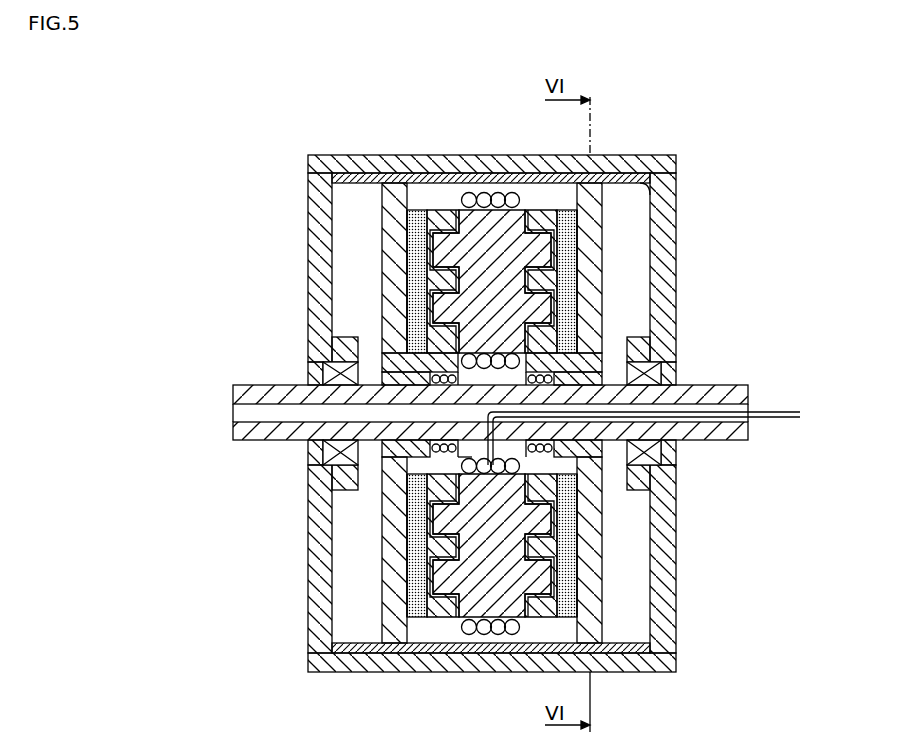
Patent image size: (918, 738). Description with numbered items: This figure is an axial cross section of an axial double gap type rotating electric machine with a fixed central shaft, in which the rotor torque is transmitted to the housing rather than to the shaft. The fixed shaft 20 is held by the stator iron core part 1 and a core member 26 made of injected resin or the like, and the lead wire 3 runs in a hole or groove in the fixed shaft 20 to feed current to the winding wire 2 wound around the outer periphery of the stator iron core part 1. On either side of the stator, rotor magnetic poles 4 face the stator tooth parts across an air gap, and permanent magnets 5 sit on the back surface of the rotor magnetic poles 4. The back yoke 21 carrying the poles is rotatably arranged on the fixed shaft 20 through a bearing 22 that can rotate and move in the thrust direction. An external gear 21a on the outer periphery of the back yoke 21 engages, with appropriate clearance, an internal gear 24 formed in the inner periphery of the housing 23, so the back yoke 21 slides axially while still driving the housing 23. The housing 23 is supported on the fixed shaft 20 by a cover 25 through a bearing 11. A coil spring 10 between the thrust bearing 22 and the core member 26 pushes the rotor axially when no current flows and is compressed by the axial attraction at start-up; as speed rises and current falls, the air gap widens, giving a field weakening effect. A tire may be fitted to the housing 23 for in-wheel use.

The stator iron core part 1 is at (440, 215).
The winding wire 2 is at (467, 198).
The lead wire 3 is at (770, 413).
The rotor magnetic poles 4 is at (417, 213).
The permanent magnet 5 is at (405, 210).
The coil spring 10 is at (494, 363).
The bearing 11 is at (340, 362).
The fixed shaft 20 is at (723, 395).
The back yoke 21 is at (393, 213).
The external gear 21a is at (348, 178).
The bearing 22 is at (383, 353).
The housing 23 is at (485, 165).
The internal gear 24 is at (647, 196).
The cover 25 is at (317, 193).
The core member 26 is at (465, 457).